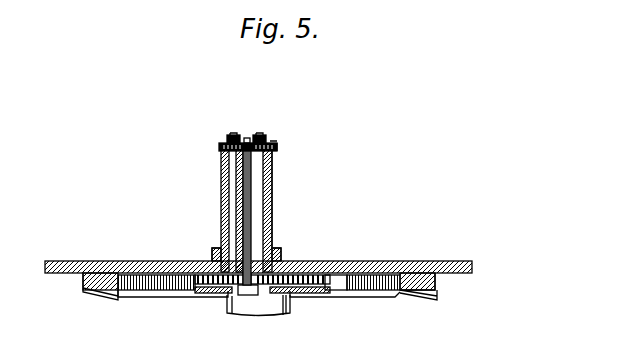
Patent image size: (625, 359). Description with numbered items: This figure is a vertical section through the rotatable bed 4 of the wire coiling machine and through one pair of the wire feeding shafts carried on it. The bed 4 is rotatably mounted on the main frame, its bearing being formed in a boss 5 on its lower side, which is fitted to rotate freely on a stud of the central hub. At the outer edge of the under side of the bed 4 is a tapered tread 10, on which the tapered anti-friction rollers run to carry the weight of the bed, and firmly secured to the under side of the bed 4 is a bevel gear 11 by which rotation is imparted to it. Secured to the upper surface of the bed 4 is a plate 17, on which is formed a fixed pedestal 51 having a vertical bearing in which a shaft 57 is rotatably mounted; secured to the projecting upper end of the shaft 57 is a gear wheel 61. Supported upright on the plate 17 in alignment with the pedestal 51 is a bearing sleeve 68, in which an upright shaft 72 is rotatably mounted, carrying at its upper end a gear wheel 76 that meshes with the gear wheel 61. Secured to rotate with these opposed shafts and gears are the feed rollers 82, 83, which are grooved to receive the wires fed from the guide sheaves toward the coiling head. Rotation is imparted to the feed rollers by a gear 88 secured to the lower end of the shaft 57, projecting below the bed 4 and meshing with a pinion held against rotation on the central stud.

The bed 4 is at (426, 261).
The tapered tread 10 is at (460, 273).
The bevel gear 11 is at (108, 293).
The gear 88 is at (352, 292).
The boss 5 is at (290, 305).
The plate 17 is at (276, 257).
The bearing sleeve 68 is at (225, 205).
The upright shaft 72 is at (239, 172).
The pedestal 51 is at (268, 178).
The shaft 57 is at (278, 220).
The gear wheel 76 is at (219, 147).
The gear wheel 61 is at (277, 147).
The feed roller 83 is at (228, 142).
The feed roller 82 is at (267, 141).